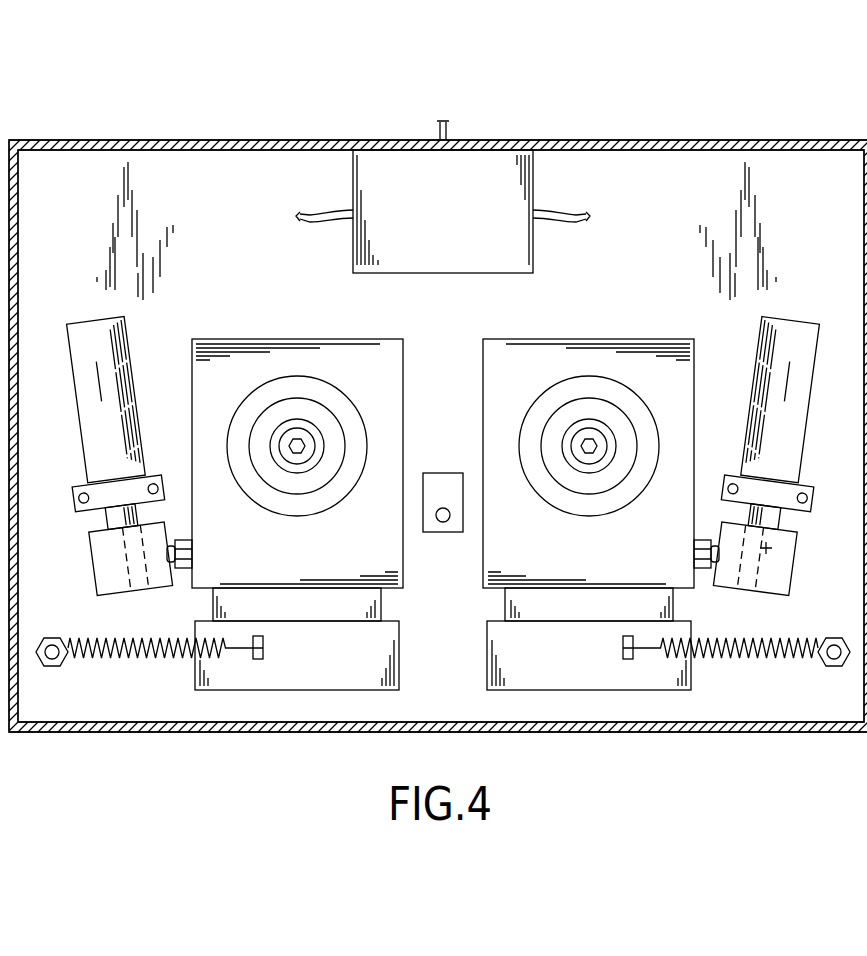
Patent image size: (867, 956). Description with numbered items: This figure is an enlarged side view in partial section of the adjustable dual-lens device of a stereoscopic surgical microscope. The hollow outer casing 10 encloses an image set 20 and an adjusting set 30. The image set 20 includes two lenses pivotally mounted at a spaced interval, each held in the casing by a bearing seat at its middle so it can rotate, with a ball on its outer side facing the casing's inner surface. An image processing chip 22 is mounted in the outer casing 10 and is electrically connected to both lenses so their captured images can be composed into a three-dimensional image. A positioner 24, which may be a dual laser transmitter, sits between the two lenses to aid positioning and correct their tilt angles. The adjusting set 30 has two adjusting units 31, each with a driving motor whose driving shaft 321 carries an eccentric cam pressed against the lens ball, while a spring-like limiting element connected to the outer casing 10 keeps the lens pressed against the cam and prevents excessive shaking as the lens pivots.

The outer casing 10 is at (712, 125).
The image set 20 is at (607, 250).
The image processing chip 22 is at (410, 165).
The positioner 24 is at (447, 482).
The adjusting set 30 is at (787, 318).
The adjusting unit 31 is at (736, 673).
The driving shaft 321 is at (774, 549).